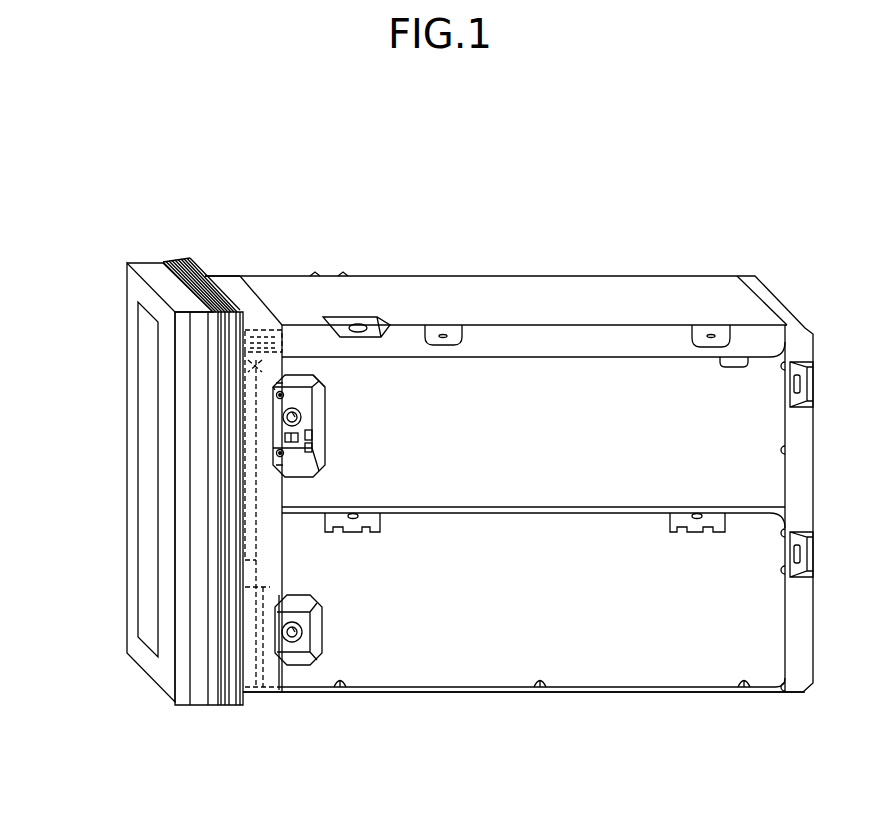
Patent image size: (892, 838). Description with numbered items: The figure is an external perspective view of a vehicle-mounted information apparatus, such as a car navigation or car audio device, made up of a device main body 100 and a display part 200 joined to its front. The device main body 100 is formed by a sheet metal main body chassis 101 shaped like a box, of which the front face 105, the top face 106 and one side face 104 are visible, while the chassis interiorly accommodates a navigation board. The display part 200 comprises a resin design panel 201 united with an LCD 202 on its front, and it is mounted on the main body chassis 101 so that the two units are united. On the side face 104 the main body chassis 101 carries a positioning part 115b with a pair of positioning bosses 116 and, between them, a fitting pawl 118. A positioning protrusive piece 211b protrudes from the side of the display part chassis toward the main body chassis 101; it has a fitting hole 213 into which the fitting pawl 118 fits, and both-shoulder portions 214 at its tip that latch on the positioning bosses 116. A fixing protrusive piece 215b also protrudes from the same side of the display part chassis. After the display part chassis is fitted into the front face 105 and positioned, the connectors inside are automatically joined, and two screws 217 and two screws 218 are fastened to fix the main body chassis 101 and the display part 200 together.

The device main body 100 is at (538, 276).
The main body chassis 101 is at (547, 451).
The side face 104 is at (627, 658).
The front face 105 is at (226, 280).
The top face 106 is at (683, 298).
The positioning part 115b is at (284, 452).
The positioning boss 116 is at (276, 385).
The fitting pawl 118 is at (287, 465).
The display part 200 is at (157, 260).
The design panel 201 is at (183, 439).
The LCD 202 is at (150, 593).
The positioning protrusive piece 211b is at (278, 420).
The fitting hole 213 is at (344, 449).
The both-shoulder portions 214 is at (279, 395).
The fixing protrusive piece 215b is at (292, 647).
The screw 217 is at (313, 408).
The screw 218 is at (302, 635).